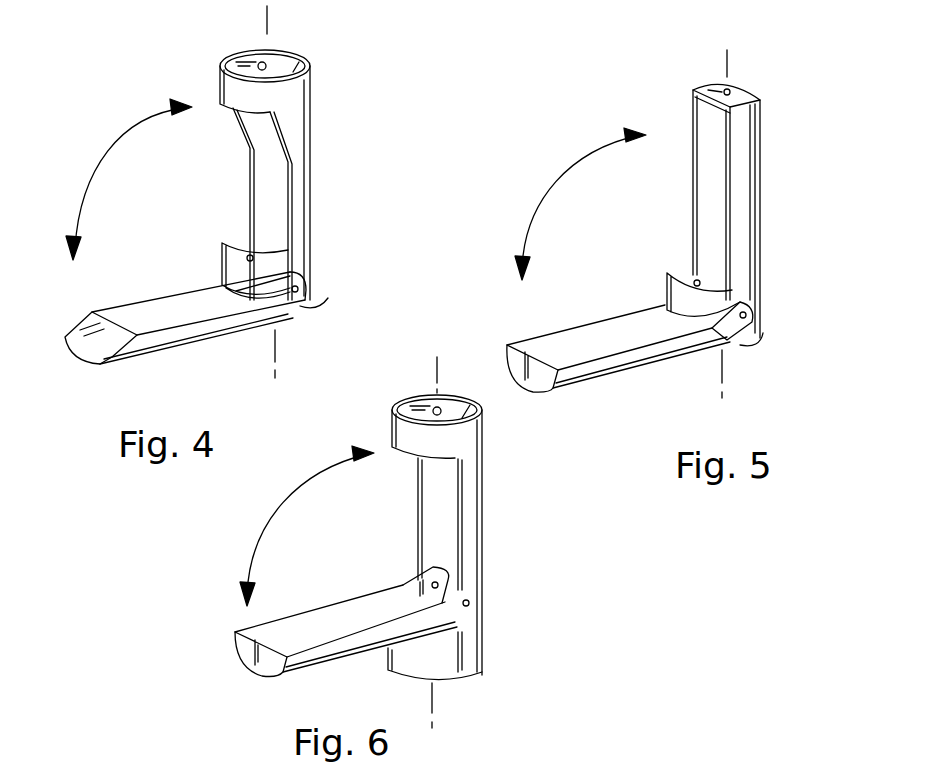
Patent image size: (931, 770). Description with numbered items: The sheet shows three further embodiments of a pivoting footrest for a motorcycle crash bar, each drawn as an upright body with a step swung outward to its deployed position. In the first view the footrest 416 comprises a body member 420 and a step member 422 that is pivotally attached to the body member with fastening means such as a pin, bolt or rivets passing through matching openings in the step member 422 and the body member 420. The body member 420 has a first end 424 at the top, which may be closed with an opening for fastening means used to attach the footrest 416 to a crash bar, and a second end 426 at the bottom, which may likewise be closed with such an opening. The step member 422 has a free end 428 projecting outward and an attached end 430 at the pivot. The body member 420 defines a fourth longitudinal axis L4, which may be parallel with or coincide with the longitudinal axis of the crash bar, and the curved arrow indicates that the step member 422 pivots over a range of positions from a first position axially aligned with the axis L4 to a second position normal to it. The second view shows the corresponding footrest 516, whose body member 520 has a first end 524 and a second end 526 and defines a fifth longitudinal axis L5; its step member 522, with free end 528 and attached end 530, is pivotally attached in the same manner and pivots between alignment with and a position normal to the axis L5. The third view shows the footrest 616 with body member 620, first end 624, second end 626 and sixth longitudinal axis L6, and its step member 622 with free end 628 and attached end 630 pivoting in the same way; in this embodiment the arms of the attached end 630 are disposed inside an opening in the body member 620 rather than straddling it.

In FIG. 4, the footrest 416 is at (322, 173).
In FIG. 4, the body member 420 is at (312, 218).
In FIG. 4, the step member 422 is at (189, 359).
In FIG. 4, the first end 424 is at (302, 70).
In FIG. 4, the second end 426 is at (307, 311).
In FIG. 4, the free end 428 is at (72, 352).
In FIG. 4, the attached end 430 is at (284, 318).
In FIG. 4, the fourth longitudinal axis L4 is at (267, 205).
In FIG. 5, the footrest 516 is at (764, 211).
In FIG. 5, the body member 520 is at (764, 262).
In FIG. 5, the step member 522 is at (631, 370).
In FIG. 5, the first end 524 is at (762, 118).
In FIG. 5, the second end 526 is at (754, 338).
In FIG. 5, the free end 528 is at (507, 360).
In FIG. 5, the attached end 530 is at (726, 346).
In FIG. 5, the fifth longitudinal axis L5 is at (719, 223).
In FIG. 6, the footrest 616 is at (481, 538).
In FIG. 6, the body member 620 is at (484, 569).
In FIG. 6, the step member 622 is at (343, 660).
In FIG. 6, the first end 624 is at (467, 426).
In FIG. 6, the second end 626 is at (470, 682).
In FIG. 6, the free end 628 is at (236, 631).
In FIG. 6, the attached end 630 is at (455, 625).
In FIG. 6, the sixth longitudinal axis L6 is at (434, 543).